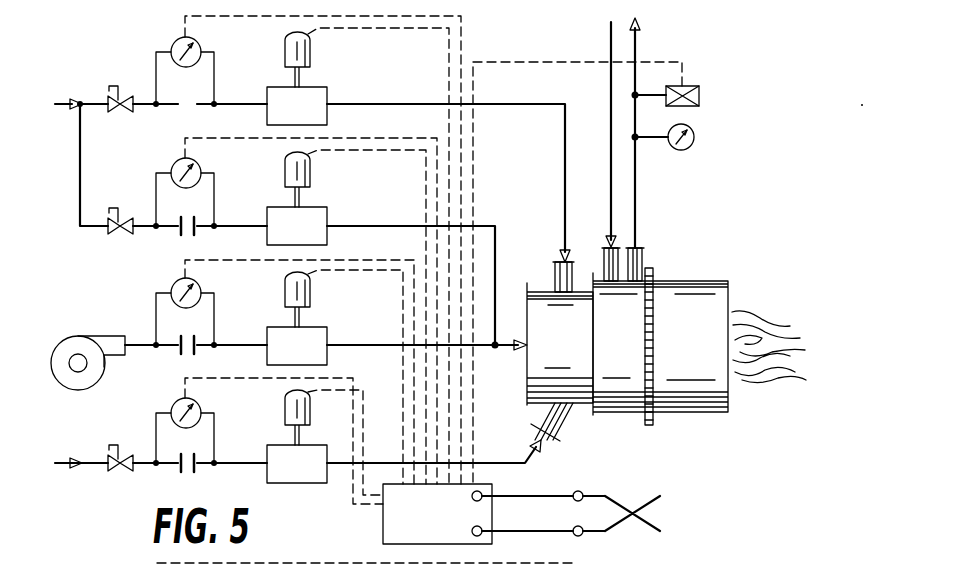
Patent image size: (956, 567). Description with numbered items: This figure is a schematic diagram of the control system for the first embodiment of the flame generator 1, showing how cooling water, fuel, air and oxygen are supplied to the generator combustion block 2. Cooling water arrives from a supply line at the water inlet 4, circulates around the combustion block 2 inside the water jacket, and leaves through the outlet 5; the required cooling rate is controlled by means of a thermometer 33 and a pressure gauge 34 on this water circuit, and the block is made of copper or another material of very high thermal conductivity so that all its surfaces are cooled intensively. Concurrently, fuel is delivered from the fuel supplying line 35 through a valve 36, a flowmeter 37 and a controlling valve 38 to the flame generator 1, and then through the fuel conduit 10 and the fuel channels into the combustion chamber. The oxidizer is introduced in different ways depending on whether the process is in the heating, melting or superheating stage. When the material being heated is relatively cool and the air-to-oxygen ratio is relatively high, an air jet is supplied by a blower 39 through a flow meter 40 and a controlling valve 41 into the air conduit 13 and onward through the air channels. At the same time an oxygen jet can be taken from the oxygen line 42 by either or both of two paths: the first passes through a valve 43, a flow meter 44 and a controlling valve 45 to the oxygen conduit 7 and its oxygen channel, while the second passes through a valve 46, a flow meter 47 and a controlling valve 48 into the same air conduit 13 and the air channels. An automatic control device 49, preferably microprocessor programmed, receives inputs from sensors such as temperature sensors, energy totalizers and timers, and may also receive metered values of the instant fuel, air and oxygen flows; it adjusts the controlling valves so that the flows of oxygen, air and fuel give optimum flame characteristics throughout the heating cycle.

The flame generator 1 is at (647, 337).
The generator combustion block 2 is at (692, 400).
The water inlet 4 is at (603, 258).
The water outlet 5 is at (644, 260).
The oxygen conduit 7 is at (555, 272).
The fluid fuel conduit 10 is at (563, 423).
The air supply conduit 13 is at (530, 360).
The thermometer 33 is at (700, 93).
The pressure gauge 34 is at (694, 137).
The fuel supplying line 35 is at (88, 460).
The valve 36 is at (125, 470).
The flowmeter 37 is at (198, 468).
The controlling valve 38 is at (290, 480).
The blower 39 is at (90, 337).
The flow meter 40 is at (163, 315).
The controlling valve 41 is at (273, 332).
The oxygen line 42 is at (80, 100).
The valve 43 is at (123, 95).
The flow meter 44 is at (162, 62).
The controlling valve 45 is at (272, 90).
The valve 46 is at (123, 217).
The flow meter 47 is at (172, 229).
The controlling valve 48 is at (327, 213).
The automatic control device 49 is at (437, 520).